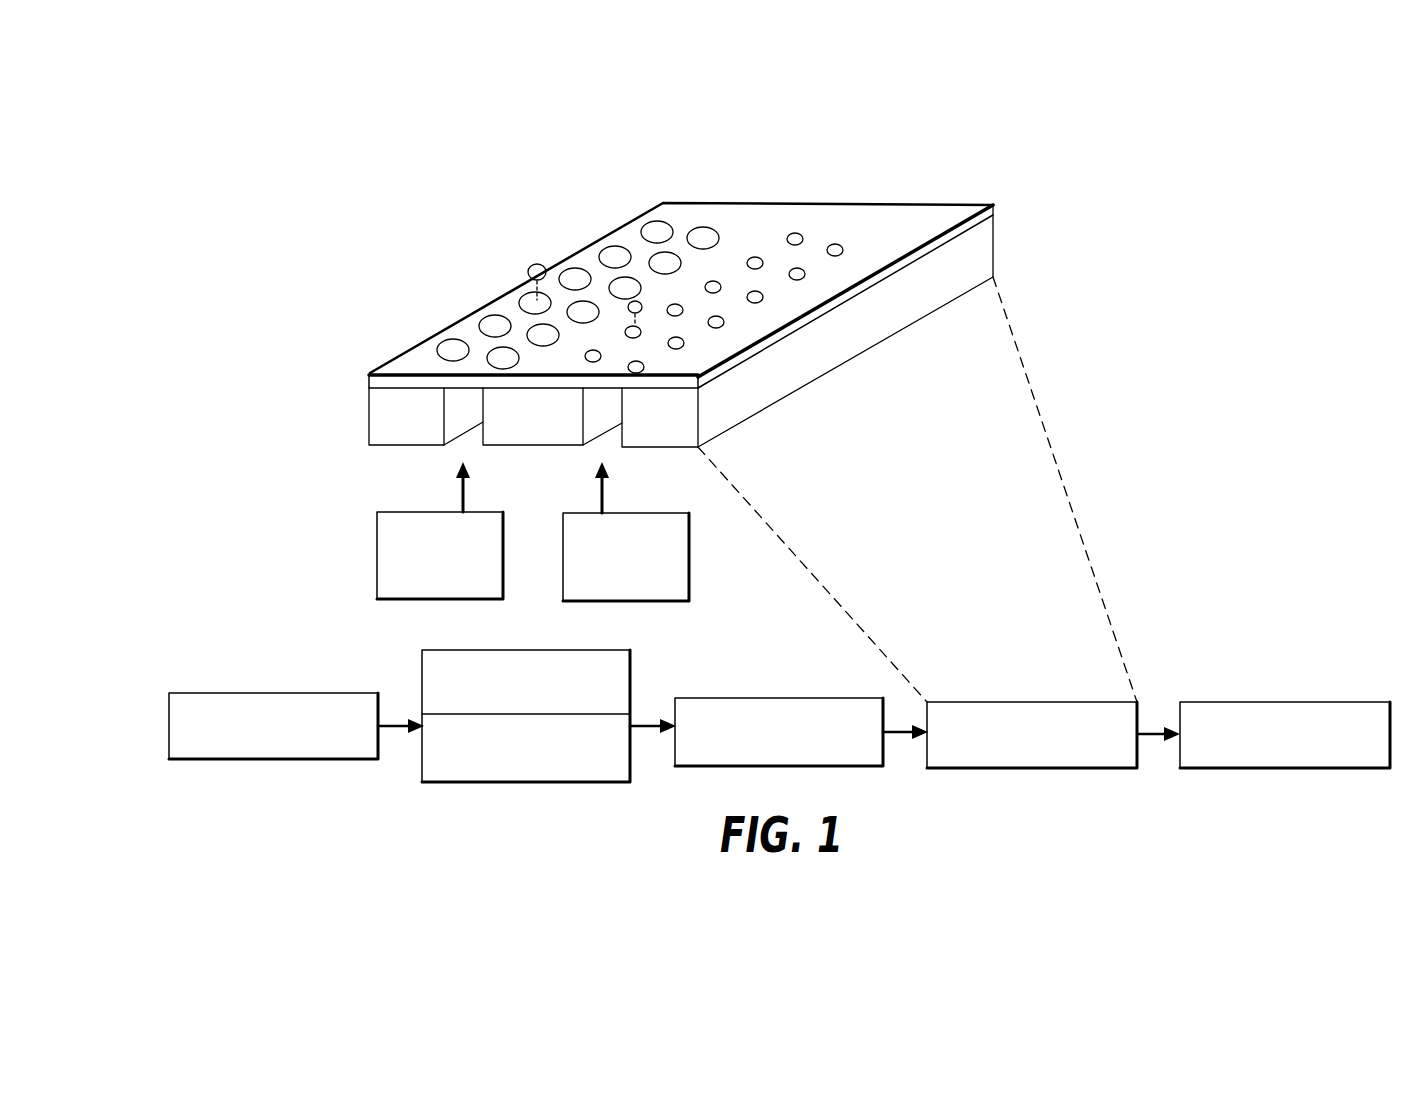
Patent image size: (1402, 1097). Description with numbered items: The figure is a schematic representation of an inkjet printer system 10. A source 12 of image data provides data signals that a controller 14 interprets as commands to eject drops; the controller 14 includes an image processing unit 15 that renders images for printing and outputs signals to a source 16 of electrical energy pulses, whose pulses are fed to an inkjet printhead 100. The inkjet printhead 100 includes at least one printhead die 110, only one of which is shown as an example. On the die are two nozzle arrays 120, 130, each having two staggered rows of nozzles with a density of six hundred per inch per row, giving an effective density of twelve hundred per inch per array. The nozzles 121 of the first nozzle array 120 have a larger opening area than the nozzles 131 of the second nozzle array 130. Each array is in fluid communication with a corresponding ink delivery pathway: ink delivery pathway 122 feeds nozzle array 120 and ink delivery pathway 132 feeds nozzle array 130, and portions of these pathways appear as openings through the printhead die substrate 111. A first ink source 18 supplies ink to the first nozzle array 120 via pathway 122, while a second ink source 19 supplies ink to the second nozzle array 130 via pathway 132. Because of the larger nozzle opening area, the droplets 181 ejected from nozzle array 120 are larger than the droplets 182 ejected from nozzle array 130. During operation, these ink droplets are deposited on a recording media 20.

The inkjet printer system 10 is at (1045, 116).
The source of image data 12 is at (293, 693).
The controller 14 is at (553, 650).
The image processing unit 15 is at (553, 782).
The source of electrical energy pulses 16 is at (778, 698).
The first ink source 18 is at (377, 562).
The second ink source 19 is at (689, 558).
The recording media 20 is at (1287, 702).
The inkjet printhead 100 is at (1028, 229).
The printhead die 110 is at (819, 390).
The printhead die substrate 111 is at (870, 333).
The first nozzle array 120 is at (697, 208).
The nozzles of the first nozzle array 121 is at (655, 224).
The ink delivery pathway 122 is at (465, 443).
The second nozzle array 130 is at (827, 229).
The nozzles of the second nozzle array 131 is at (797, 232).
The ink delivery pathway 132 is at (603, 442).
The droplets 181 is at (532, 264).
The droplets 182 is at (632, 301).